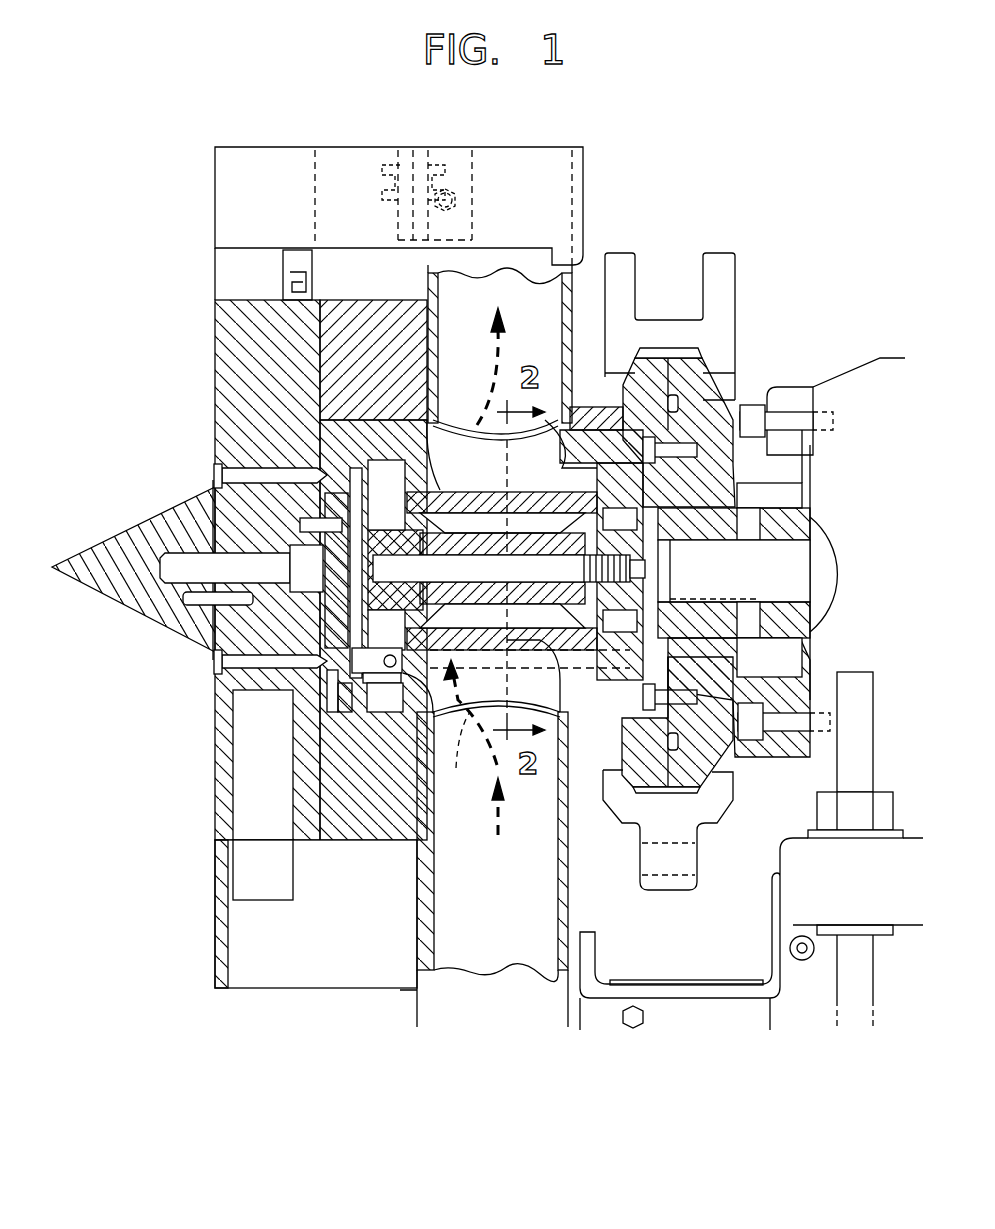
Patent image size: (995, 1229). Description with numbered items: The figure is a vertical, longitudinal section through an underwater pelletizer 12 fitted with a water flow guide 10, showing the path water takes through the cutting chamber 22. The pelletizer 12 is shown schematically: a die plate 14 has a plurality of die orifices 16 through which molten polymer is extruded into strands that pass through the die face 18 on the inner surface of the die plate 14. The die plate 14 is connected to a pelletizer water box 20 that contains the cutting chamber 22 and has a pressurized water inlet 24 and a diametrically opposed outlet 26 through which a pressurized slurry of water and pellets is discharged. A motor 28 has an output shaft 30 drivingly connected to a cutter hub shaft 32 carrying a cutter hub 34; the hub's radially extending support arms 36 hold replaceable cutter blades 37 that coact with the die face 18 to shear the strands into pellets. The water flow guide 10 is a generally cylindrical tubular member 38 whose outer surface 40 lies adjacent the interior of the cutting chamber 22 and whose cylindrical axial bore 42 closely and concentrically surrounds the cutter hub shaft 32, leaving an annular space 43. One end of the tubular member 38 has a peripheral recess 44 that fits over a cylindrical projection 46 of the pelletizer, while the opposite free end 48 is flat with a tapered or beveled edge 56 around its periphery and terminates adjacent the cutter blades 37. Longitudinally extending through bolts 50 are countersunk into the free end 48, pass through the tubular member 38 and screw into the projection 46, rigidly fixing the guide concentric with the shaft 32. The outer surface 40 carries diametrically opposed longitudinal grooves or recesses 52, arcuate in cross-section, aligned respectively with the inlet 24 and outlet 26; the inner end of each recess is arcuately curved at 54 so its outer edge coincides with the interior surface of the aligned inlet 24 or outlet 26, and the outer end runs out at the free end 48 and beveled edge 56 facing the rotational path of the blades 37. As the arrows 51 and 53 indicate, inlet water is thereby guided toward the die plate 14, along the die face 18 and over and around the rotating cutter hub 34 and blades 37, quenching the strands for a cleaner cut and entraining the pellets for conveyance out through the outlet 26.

The water flow guide 10 is at (395, 708).
The underwater pelletizer 12 is at (163, 649).
The die plate 14 is at (225, 395).
The die orifices 16 is at (258, 688).
The die face 18 is at (360, 577).
The pelletizer water box 20 is at (594, 261).
The cutting chamber 22 is at (372, 448).
The pressurized water inlet 24 is at (515, 975).
The outlet 26 is at (488, 283).
The motor 28 is at (845, 382).
The output shaft 30 is at (793, 565).
The cutter hub shaft 32 is at (717, 518).
The cutter hub 34 is at (377, 527).
The support arms 36 is at (377, 677).
The cutter blades 37 is at (363, 665).
The cylindrical tubular member 38 is at (670, 385).
The outer surface 40 is at (603, 770).
The cylindrical axial bore 42 is at (567, 730).
The annular space 43 is at (663, 582).
The peripheral recess 44 is at (735, 478).
The cylindrical projection 46 is at (773, 613).
The free end 48 is at (375, 680).
The through bolts 50 is at (458, 754).
The arrow 51 is at (493, 800).
The grooves or recesses 52 is at (438, 492).
The arrow 53 is at (497, 357).
The arcuately curved inner end 54 is at (556, 425).
The beveled edge 56 is at (393, 708).